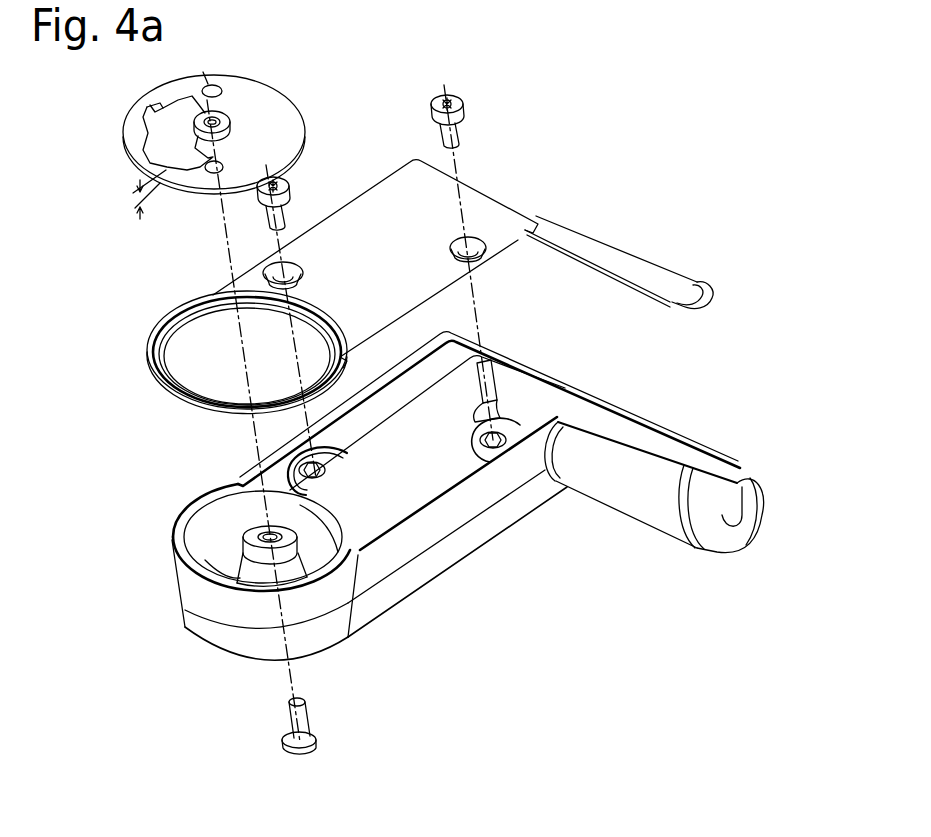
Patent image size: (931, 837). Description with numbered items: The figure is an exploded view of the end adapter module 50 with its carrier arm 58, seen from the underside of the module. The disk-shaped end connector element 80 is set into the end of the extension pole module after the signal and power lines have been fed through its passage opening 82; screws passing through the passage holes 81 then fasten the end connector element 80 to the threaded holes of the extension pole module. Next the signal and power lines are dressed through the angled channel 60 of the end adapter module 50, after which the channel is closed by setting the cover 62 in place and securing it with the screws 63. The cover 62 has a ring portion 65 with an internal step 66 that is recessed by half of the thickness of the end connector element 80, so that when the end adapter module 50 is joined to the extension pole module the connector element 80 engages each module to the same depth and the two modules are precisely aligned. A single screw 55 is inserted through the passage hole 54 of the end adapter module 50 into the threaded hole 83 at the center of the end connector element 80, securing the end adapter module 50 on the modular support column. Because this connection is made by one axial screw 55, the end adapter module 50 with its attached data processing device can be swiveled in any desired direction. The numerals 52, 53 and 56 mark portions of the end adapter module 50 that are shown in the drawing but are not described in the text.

The end adapter module 50 is at (683, 160).
The cup rim 52 is at (222, 523).
The cup interior 53 is at (257, 567).
The passage hole 54 is at (260, 537).
The screw 55 is at (307, 717).
The cup outer wall 56 is at (217, 635).
The carrier arm 58 is at (703, 448).
The angled channel 60 is at (470, 430).
The cover 62 is at (488, 215).
The screws 63 is at (430, 118).
The ring portion 65 is at (160, 330).
The internal step 66 is at (217, 310).
The end connector element 80 is at (135, 146).
The passage holes 81 is at (220, 163).
The passage opening 82 is at (183, 134).
The threaded hole 83 is at (205, 120).